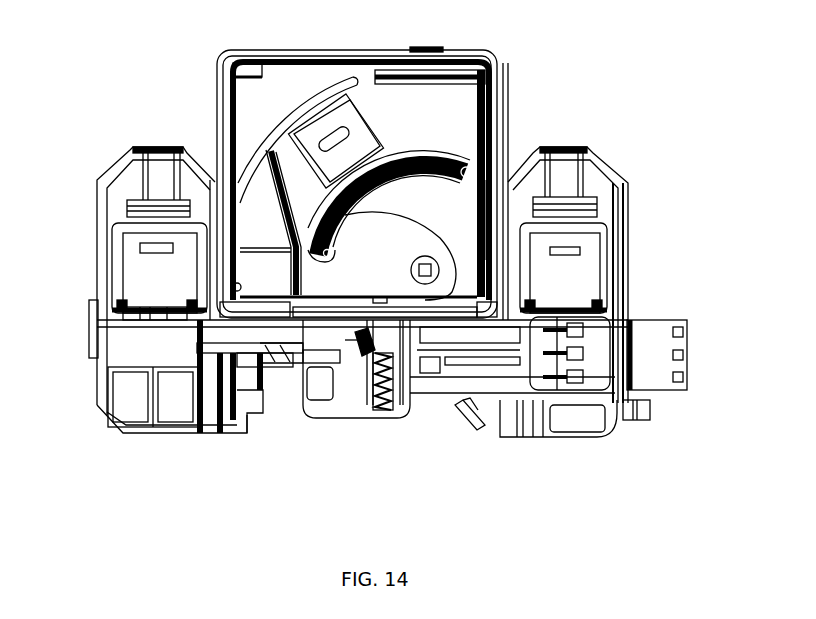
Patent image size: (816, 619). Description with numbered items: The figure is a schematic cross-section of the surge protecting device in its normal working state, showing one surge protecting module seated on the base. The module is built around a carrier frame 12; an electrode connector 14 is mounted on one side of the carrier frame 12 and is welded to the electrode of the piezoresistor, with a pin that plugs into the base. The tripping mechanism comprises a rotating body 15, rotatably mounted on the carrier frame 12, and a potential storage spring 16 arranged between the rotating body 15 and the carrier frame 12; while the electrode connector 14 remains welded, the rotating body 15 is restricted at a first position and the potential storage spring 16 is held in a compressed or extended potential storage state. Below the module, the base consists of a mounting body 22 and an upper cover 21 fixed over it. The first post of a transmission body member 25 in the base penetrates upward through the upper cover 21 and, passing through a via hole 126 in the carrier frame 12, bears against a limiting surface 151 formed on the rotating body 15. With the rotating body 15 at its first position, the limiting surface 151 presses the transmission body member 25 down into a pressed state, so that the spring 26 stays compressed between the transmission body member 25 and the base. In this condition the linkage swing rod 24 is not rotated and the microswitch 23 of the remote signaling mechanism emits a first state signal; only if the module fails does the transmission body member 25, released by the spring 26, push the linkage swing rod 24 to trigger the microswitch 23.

The carrier frame 12 is at (283, 87).
The electrode connector 14 is at (282, 193).
The rotating body 15 is at (400, 233).
The limiting surface 151 is at (342, 297).
The potential storage spring 16 is at (423, 160).
The via hole 126 is at (484, 232).
The upper cover 21 is at (103, 247).
The mounting body 22 is at (150, 437).
The microswitch 23 is at (305, 377).
The linkage swing rod 24 is at (370, 343).
The transmission body member 25 is at (430, 390).
The spring 26 is at (390, 410).